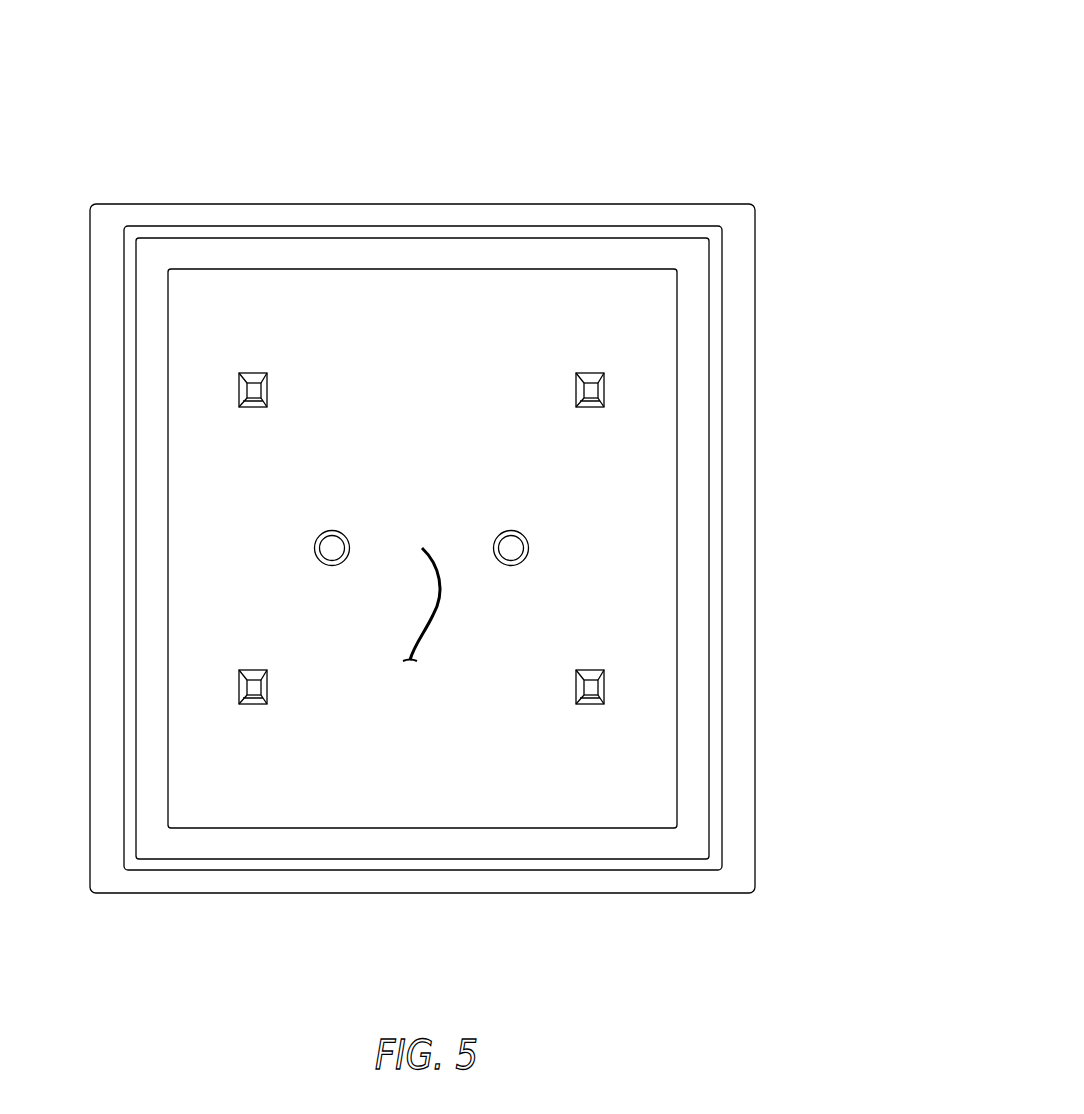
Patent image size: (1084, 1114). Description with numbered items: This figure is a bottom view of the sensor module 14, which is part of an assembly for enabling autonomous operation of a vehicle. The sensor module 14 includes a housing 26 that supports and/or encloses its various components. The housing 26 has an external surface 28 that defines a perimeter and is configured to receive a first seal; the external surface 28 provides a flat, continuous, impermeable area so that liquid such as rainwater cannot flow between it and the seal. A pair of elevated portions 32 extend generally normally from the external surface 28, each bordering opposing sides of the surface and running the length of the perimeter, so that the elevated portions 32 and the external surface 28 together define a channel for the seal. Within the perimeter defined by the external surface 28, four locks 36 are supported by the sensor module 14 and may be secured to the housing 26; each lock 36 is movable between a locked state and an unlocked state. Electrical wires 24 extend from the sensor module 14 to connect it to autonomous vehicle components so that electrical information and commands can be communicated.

The sensor module 14 is at (662, 112).
The electrical wires 24 is at (423, 627).
The housing 26 is at (755, 288).
The external surface 28 is at (712, 385).
The elevated portions 32 is at (422, 212).
The lock 36 is at (239, 380).